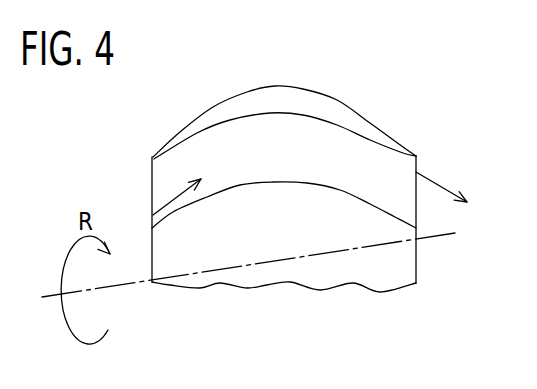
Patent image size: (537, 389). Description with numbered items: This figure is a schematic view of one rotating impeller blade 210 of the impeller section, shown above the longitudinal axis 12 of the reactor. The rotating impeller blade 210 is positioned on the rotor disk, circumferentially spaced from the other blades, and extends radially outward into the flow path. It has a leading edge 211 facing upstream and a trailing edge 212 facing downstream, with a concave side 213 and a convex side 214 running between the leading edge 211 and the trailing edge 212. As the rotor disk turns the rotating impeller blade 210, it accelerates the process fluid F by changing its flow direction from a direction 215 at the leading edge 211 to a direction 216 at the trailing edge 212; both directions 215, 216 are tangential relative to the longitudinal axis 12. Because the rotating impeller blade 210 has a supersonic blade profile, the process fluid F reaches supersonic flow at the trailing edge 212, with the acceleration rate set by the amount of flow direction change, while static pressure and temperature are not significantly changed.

The rotating impeller blade 210 is at (368, 87).
The leading edge 211 is at (152, 167).
The trailing edge 212 is at (416, 198).
The concave side 213 is at (268, 183).
The convex side 214 is at (279, 85).
The flow direction at the leading edge 215 is at (173, 202).
The flow direction at the trailing edge 216 is at (437, 182).
The longitudinal axis 12 is at (312, 257).